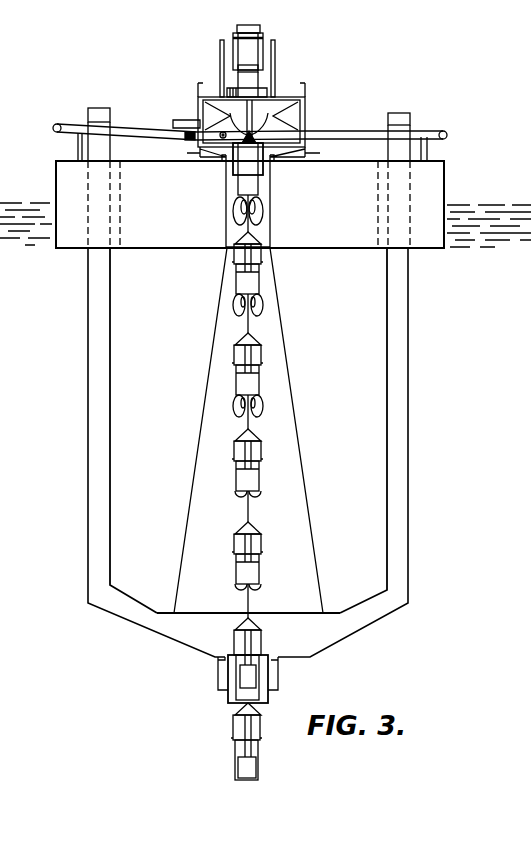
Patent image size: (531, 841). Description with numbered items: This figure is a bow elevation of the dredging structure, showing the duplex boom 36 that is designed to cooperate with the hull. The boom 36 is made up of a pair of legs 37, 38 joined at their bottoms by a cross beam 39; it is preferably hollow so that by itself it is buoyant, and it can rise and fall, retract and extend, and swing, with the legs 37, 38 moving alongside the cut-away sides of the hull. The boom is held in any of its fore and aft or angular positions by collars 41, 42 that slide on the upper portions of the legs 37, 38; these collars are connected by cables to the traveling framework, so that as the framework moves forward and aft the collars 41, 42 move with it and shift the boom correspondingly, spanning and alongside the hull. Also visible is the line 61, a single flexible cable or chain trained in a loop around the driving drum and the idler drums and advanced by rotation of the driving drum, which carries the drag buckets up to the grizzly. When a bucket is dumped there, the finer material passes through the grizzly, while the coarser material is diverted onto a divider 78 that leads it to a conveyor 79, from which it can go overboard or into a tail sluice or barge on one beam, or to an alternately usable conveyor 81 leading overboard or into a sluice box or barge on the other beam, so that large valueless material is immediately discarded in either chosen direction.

The duplex boom 36 is at (157, 612).
The leg 37 is at (110, 445).
The leg 38 is at (387, 425).
The cross beam 39 is at (262, 613).
The collar 41 is at (413, 127).
The collar 42 is at (88, 125).
The line 61 is at (248, 520).
The divider 78 is at (192, 117).
The conveyor 79 is at (125, 133).
The conveyor 81 is at (323, 128).